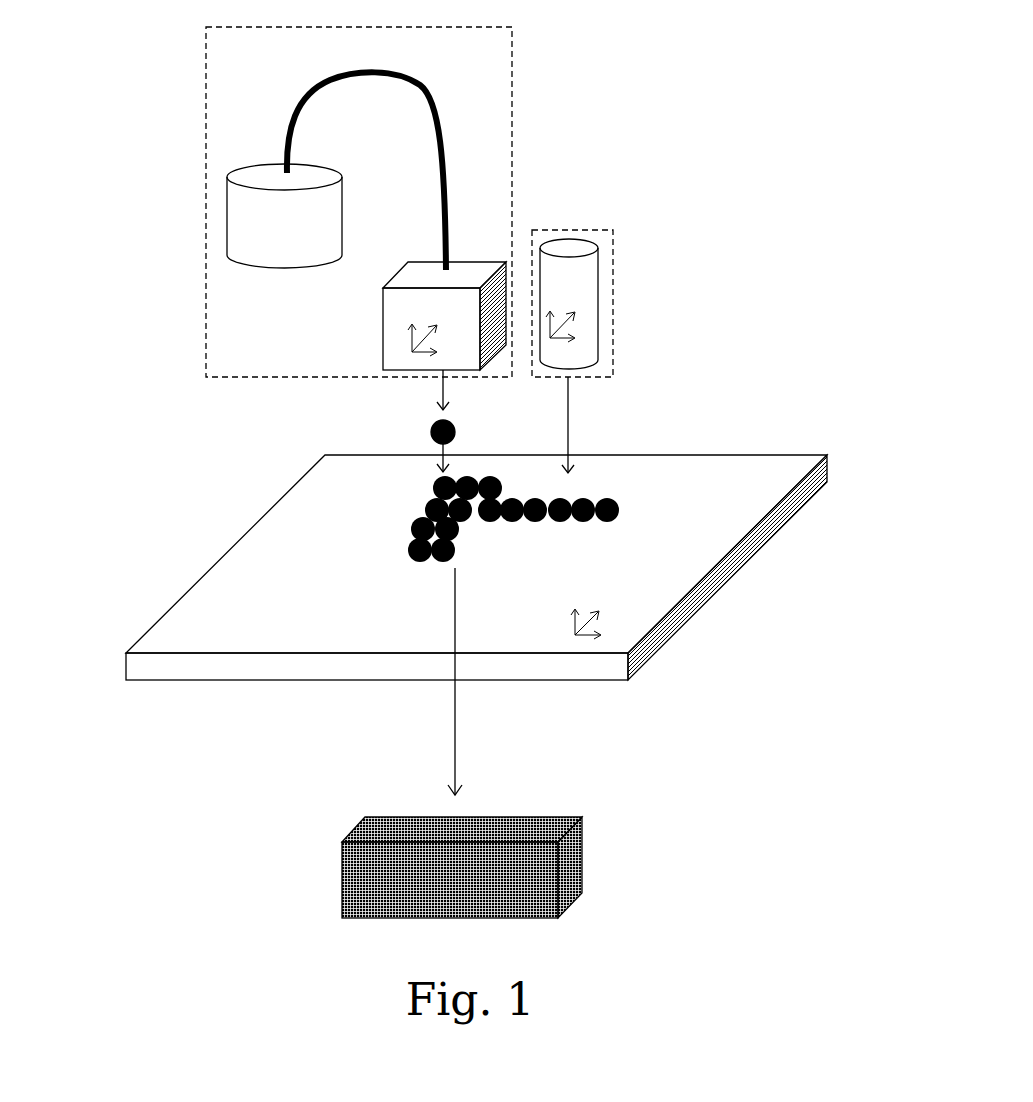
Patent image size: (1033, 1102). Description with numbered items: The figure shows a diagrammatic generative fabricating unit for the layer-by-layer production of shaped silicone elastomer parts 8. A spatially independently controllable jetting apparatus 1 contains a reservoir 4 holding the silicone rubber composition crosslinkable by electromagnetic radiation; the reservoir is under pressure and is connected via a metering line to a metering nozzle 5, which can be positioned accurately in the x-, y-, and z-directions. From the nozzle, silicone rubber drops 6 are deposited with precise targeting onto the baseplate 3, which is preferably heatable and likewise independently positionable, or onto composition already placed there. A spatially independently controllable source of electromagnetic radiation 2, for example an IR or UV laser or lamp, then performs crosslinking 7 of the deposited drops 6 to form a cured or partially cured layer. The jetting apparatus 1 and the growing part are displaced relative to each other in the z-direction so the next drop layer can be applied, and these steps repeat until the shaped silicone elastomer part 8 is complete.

The jetting apparatus 1 is at (205, 203).
The source of electromagnetic radiation 2 is at (615, 303).
The baseplate 3 is at (476, 625).
The reservoir 4 is at (336, 171).
The metering nozzle 5 is at (382, 328).
The drops 6 is at (431, 433).
The crosslinking 7 is at (568, 420).
The shaped silicone elastomer part 8 is at (582, 857).